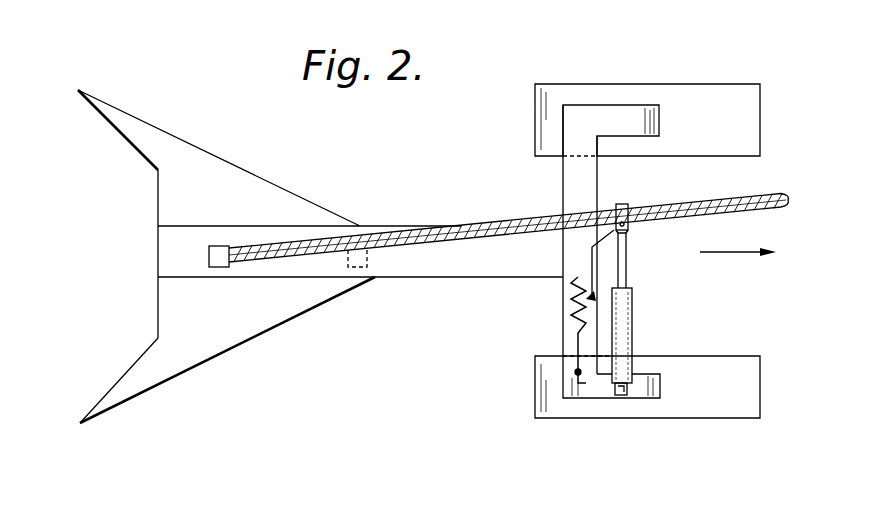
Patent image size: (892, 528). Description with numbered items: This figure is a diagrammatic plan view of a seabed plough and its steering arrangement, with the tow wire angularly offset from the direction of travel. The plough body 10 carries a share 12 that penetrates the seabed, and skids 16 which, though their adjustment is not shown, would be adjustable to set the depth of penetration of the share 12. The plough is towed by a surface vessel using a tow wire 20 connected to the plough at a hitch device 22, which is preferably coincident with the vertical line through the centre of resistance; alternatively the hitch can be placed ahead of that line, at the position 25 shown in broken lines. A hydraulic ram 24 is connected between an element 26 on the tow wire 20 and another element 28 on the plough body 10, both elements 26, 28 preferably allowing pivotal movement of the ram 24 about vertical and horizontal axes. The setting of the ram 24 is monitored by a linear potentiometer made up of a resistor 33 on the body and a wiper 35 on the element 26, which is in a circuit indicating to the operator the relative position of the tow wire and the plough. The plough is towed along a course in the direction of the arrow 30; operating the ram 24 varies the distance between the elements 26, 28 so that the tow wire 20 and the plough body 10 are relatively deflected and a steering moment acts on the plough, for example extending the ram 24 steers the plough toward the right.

The plough body 10 is at (440, 268).
The share 12 is at (243, 320).
The skids 16 is at (667, 88).
The tow wire 20 is at (736, 194).
The hitch device 22 is at (209, 255).
The hydraulic ram 24 is at (632, 329).
The alternative hitch position 25 is at (366, 265).
The element on tow wire 26 is at (622, 214).
The element on plough body 28 is at (620, 397).
The arrow indicating towing direction 30 is at (727, 253).
The resistor 33 is at (588, 300).
The wiper 35 is at (594, 296).